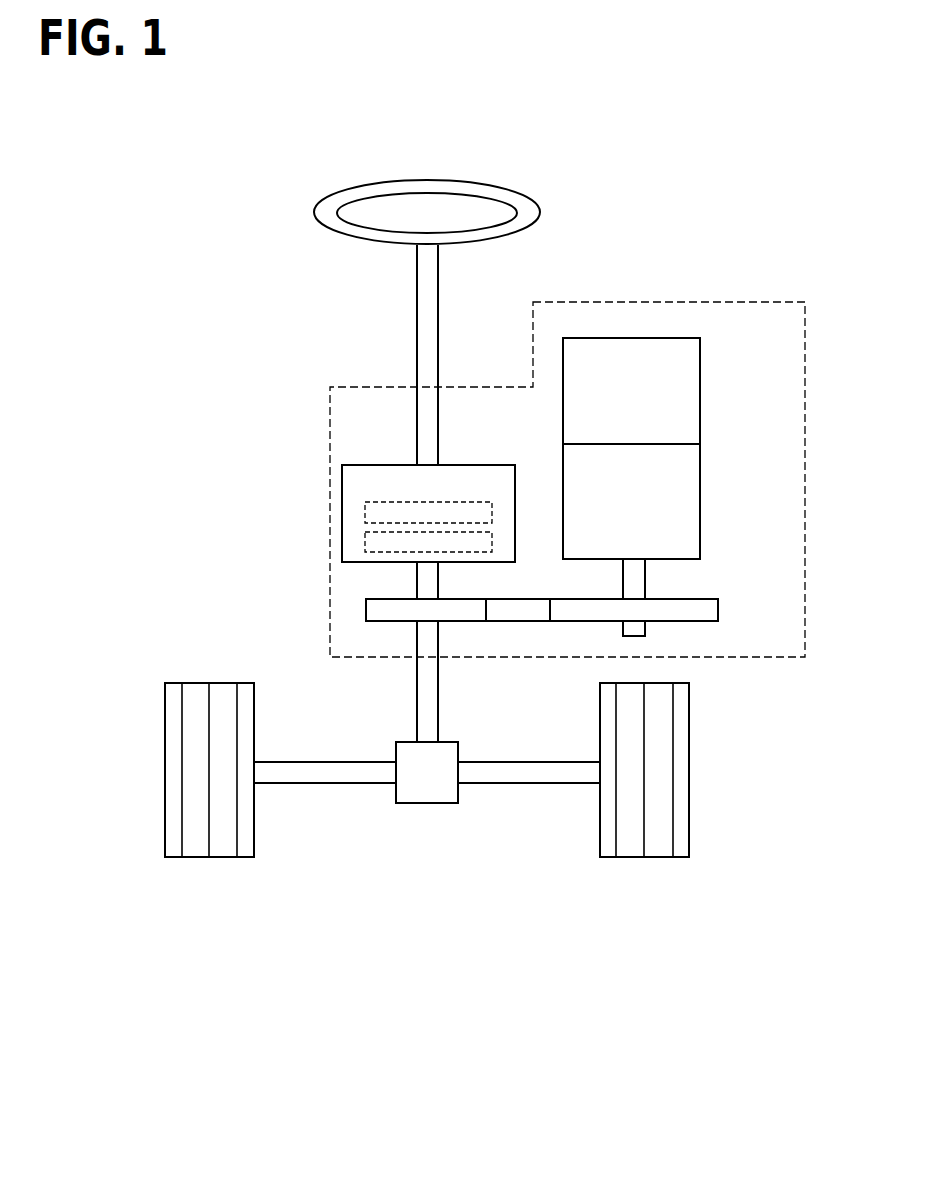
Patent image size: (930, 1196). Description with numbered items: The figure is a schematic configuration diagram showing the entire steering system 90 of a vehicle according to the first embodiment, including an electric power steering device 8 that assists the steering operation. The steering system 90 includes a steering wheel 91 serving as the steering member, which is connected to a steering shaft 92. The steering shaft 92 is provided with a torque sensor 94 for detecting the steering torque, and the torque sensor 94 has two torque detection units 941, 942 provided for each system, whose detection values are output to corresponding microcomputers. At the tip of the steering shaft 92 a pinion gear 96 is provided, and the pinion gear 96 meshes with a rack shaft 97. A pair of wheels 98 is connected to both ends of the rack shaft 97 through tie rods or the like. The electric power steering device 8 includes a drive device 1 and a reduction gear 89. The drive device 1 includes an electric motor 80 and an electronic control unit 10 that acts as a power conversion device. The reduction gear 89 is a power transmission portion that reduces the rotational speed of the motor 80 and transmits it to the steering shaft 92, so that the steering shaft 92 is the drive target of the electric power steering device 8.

The drive device 1 is at (715, 540).
The electric power steering device 8 is at (750, 302).
The electronic control unit 10 is at (700, 372).
The electric motor 80 is at (700, 478).
The reduction gear 89 is at (718, 607).
The steering system 90 is at (387, 940).
The steering wheel 91 is at (314, 212).
The steering shaft 92 is at (417, 305).
The torque sensor 94 is at (365, 465).
The torque detection unit 941 is at (365, 512).
The torque detection unit 942 is at (365, 548).
The pinion gear 96 is at (420, 805).
The rack shaft 97 is at (320, 787).
The wheels 98 is at (226, 857).